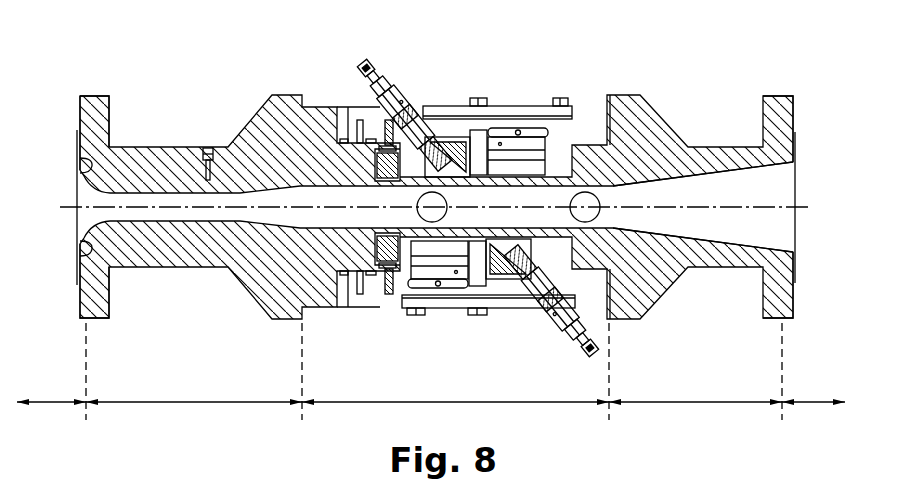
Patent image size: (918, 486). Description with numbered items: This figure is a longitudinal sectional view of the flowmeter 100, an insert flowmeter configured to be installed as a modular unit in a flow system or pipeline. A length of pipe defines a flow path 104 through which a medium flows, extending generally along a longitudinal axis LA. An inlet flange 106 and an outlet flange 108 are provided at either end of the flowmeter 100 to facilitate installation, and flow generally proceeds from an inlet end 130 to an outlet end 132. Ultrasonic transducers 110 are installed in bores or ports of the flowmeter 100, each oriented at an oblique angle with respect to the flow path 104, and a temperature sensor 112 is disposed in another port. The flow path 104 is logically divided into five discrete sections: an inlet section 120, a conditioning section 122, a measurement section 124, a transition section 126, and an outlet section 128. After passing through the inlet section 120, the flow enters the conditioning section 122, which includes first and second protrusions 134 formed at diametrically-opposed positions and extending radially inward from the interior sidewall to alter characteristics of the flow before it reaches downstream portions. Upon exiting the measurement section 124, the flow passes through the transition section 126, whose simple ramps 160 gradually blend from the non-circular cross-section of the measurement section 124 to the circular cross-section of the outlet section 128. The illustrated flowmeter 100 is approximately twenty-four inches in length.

The flowmeter 100 is at (247, 82).
The flow path 104 is at (86, 202).
The inlet flange 106 is at (96, 102).
The outlet flange 108 is at (776, 100).
The ultrasonic transducers 110 is at (380, 62).
The temperature sensor 112 is at (206, 144).
The inlet section 120 is at (51, 391).
The conditioning section 122 is at (194, 391).
The measurement section 124 is at (455, 391).
The transition section 126 is at (695, 391).
The outlet section 128 is at (813, 391).
The inlet end 130 is at (64, 96).
The outlet end 132 is at (806, 132).
The protrusions 134 is at (100, 172).
The ramps 160 is at (672, 183).
The longitudinal axis LA is at (806, 205).